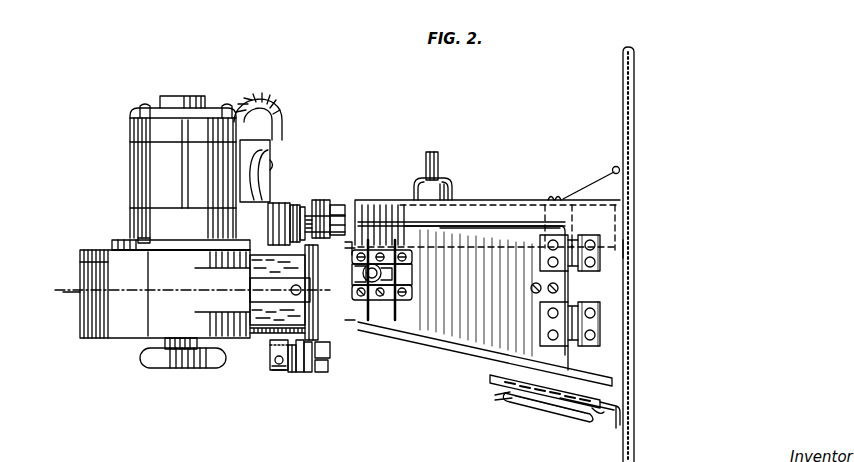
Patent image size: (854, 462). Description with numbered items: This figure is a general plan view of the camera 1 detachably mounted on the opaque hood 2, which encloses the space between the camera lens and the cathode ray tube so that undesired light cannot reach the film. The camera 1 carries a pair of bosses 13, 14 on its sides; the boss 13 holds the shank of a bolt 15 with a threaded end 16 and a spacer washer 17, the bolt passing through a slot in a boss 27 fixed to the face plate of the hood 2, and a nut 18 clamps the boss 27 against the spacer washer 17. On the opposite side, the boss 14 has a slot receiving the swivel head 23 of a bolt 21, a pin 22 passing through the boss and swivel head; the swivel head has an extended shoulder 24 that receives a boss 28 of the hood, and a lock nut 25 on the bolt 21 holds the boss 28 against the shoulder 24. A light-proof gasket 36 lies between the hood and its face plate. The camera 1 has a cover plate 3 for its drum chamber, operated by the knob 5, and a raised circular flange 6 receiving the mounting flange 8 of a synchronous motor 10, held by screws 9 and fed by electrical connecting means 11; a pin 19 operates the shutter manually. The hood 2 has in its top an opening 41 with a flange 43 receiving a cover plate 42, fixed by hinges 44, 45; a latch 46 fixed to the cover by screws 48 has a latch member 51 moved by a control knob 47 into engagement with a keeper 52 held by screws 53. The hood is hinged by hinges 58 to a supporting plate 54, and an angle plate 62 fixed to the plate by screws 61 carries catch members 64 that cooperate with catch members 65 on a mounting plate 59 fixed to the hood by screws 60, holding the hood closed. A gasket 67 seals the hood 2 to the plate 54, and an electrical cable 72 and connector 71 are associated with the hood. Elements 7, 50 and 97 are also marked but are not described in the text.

The camera 1 is at (80, 252).
The hood 2 is at (454, 200).
The cover plate 3 is at (63, 294).
The knob 5 is at (180, 362).
The flange 6 is at (98, 246).
The bracket 7 is at (165, 346).
The mounting flange 8 is at (116, 242).
The screws 9 is at (146, 240).
The motor 10 is at (128, 152).
The electrical connecting means 11 is at (270, 136).
The boss 13 is at (293, 204).
The boss 14 is at (291, 372).
The bolt 15 is at (268, 215).
The threaded end 16 is at (328, 224).
The spacer washer 17 is at (303, 206).
The nut 18 is at (332, 205).
The pin 19 is at (302, 303).
The bolt 21 is at (330, 350).
The pin 22 is at (276, 366).
The swivel head 23 is at (271, 354).
The shoulder 24 is at (300, 372).
The lock nut 25 is at (328, 366).
The boss 27 is at (315, 200).
The boss 28 is at (310, 372).
The light-proof gasket 36 is at (302, 258).
The opening 41 is at (503, 222).
The cover plate 42 is at (476, 236).
The flange 43 is at (518, 223).
The hinge 44 is at (596, 312).
The hinge 45 is at (540, 312).
The latch 46 is at (381, 249).
The control knob 47 is at (378, 297).
The screws 48 is at (412, 292).
The link 50 is at (588, 183).
The latch member 51 is at (354, 243).
The keeper 52 is at (372, 326).
The screws 53 is at (354, 252).
The supporting plate 54 is at (634, 372).
The hinges 58 is at (613, 168).
The mounting plate 59 is at (496, 394).
The screws 60 is at (566, 386).
The screws 61 is at (622, 416).
The angle plate 62 is at (622, 402).
The catch members 64 is at (598, 414).
The catch members 65 is at (545, 403).
The gasket 67 is at (625, 250).
The connector 71 is at (417, 186).
The electrical cable 72 is at (432, 151).
The housing end 97 is at (80, 264).